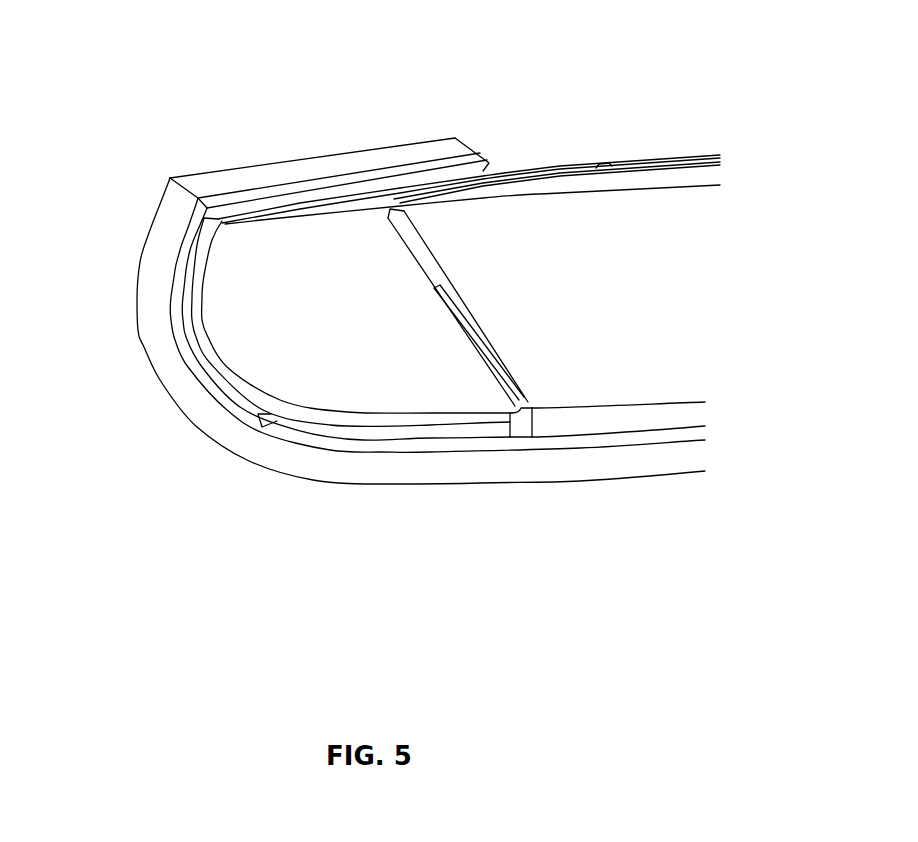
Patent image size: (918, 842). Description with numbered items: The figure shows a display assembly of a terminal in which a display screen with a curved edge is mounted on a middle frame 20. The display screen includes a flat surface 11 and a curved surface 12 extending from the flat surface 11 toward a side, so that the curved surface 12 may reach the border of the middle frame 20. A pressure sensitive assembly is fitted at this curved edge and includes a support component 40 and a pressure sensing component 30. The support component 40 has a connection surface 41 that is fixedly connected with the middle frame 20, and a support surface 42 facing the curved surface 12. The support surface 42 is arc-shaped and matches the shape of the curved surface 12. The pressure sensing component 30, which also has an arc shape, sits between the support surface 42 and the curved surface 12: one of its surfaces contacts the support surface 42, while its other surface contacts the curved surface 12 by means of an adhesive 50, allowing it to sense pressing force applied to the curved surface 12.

The flat surface 11 is at (534, 464).
The curved surface 12 is at (157, 300).
The middle frame 20 is at (586, 223).
The pressure sensing component 30 is at (208, 333).
The support component 40 is at (382, 373).
The connection surface 41 is at (410, 251).
The support surface 42 is at (200, 287).
The adhesive 50 is at (217, 373).